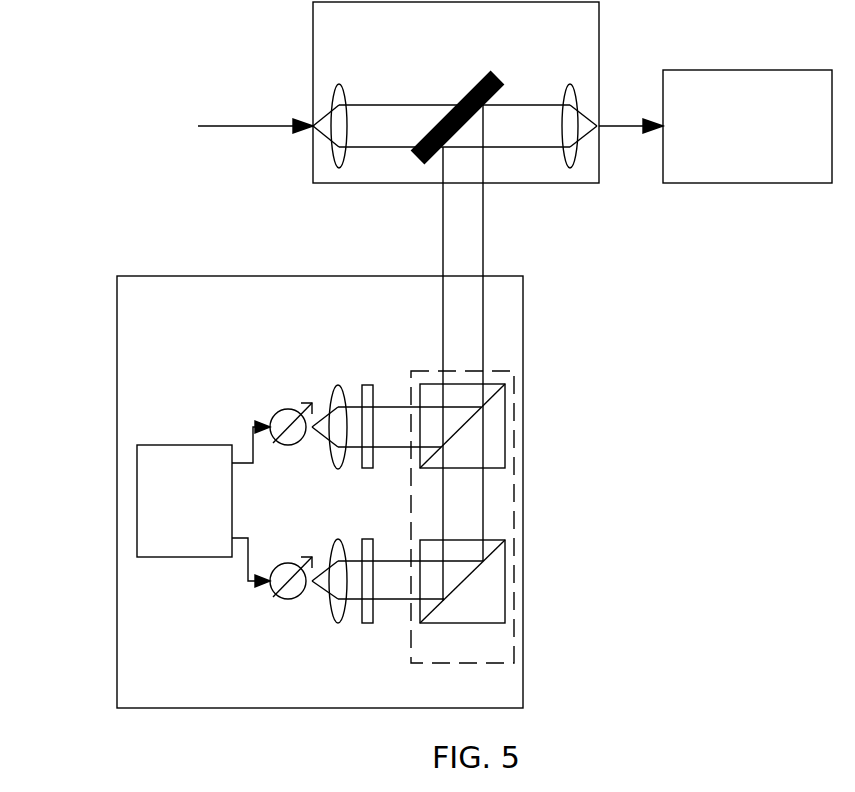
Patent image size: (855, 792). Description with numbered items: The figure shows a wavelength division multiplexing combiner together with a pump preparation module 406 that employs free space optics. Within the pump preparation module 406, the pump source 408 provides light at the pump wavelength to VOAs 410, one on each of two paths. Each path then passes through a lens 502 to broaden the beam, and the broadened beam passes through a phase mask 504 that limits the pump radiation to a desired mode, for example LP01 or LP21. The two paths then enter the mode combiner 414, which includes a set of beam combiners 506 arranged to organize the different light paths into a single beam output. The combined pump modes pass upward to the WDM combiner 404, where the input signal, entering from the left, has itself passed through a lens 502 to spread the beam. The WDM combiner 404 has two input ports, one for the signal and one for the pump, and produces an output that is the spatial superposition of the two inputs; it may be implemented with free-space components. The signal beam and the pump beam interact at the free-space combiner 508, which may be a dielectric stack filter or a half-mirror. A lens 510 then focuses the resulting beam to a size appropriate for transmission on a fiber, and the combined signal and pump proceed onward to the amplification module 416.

The WDM combiner 404 is at (435, 65).
The pump preparation module 406 is at (243, 338).
The pump source 408 is at (165, 542).
The VOA 410 is at (270, 417).
The mode combiner 414 is at (442, 655).
The amplification module 416 is at (727, 168).
The lens 502 is at (335, 164).
The phase mask 504 is at (367, 624).
The beam combiner 506 is at (421, 623).
The free-space combiner 508 is at (412, 160).
The lens 510 is at (558, 160).